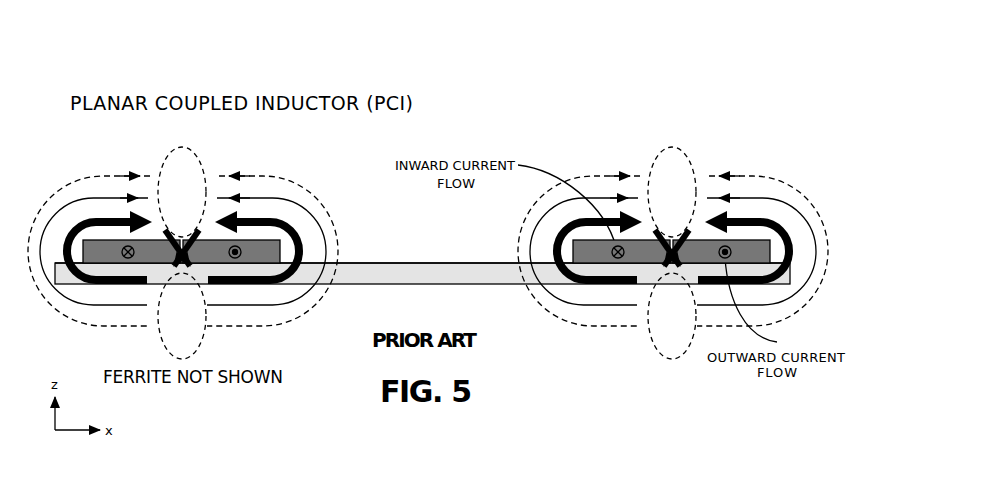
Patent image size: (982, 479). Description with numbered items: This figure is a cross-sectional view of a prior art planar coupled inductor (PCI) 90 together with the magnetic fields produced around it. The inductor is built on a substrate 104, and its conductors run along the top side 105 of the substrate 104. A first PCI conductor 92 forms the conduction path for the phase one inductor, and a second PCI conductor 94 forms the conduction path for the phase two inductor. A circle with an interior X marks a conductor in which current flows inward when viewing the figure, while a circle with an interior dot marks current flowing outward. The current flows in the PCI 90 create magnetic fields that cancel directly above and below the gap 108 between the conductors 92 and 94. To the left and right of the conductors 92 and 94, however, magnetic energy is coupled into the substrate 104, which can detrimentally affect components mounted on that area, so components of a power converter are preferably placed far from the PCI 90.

The planar coupled inductor 90 is at (402, 78).
The first PCI conductor 92 is at (147, 245).
The second PCI conductor 94 is at (253, 245).
The substrate 104 is at (418, 276).
The top side 105 is at (412, 262).
The gap 108 is at (180, 243).